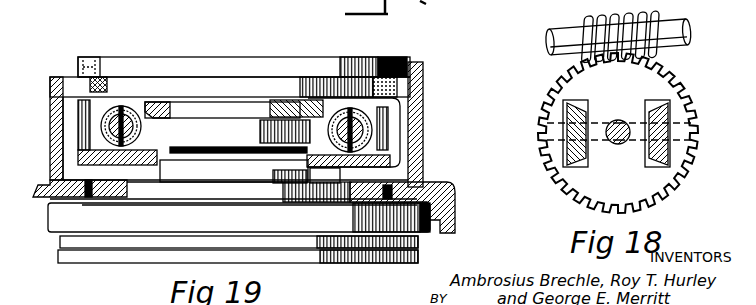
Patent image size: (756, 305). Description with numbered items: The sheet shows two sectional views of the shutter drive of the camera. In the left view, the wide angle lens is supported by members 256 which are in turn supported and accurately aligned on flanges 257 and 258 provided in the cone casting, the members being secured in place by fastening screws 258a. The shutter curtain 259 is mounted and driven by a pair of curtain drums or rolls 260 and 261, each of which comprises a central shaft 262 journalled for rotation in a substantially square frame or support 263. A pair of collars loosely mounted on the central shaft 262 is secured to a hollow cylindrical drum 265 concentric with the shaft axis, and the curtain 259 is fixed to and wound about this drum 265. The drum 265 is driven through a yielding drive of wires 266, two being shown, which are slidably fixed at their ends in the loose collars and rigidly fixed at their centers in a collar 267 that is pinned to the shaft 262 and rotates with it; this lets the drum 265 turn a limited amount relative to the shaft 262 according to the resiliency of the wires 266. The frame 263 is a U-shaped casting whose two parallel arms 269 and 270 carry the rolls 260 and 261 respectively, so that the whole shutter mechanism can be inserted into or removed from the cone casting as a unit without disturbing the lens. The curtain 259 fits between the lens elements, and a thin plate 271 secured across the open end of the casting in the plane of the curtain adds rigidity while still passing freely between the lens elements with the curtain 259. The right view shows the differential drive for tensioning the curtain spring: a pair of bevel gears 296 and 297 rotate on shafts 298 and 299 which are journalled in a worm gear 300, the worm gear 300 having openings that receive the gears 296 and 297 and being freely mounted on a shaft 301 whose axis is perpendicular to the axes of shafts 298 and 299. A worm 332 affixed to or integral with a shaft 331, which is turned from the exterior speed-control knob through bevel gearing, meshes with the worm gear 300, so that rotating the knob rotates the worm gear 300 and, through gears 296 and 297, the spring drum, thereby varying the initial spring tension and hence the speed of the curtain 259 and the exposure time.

In FIG. 19, the members 256 is at (247, 114).
In FIG. 19, the flange 257 is at (103, 82).
In FIG. 19, the flange 258 is at (103, 197).
In FIG. 19, the screw head 258a is at (102, 53).
In FIG. 19, the curtain 259 is at (143, 150).
In FIG. 19, the curtain drum 260 is at (133, 112).
In FIG. 19, the curtain drum 261 is at (343, 168).
In FIG. 19, the central shaft 262 is at (125, 107).
In FIG. 19, the frame 263 is at (383, 128).
In FIG. 19, the hollow cylindrical drum 265 is at (147, 117).
In FIG. 19, the wires 266 is at (110, 131).
In FIG. 19, the collar 267 is at (113, 163).
In FIG. 19, the arm 269 is at (66, 153).
In FIG. 19, the arm 270 is at (423, 157).
In FIG. 19, the thin plate 271 is at (200, 148).
In FIG. 18, the bevel gear 296 is at (552, 163).
In FIG. 18, the bevel gear 297 is at (680, 153).
In FIG. 18, the shaft 298 is at (697, 127).
In FIG. 18, the shaft 299 is at (557, 127).
In FIG. 18, the worm gear 300 is at (653, 87).
In FIG. 18, the shaft 301 is at (618, 147).
In FIG. 18, the shaft 331 is at (675, 38).
In FIG. 18, the worm 332 is at (590, 13).